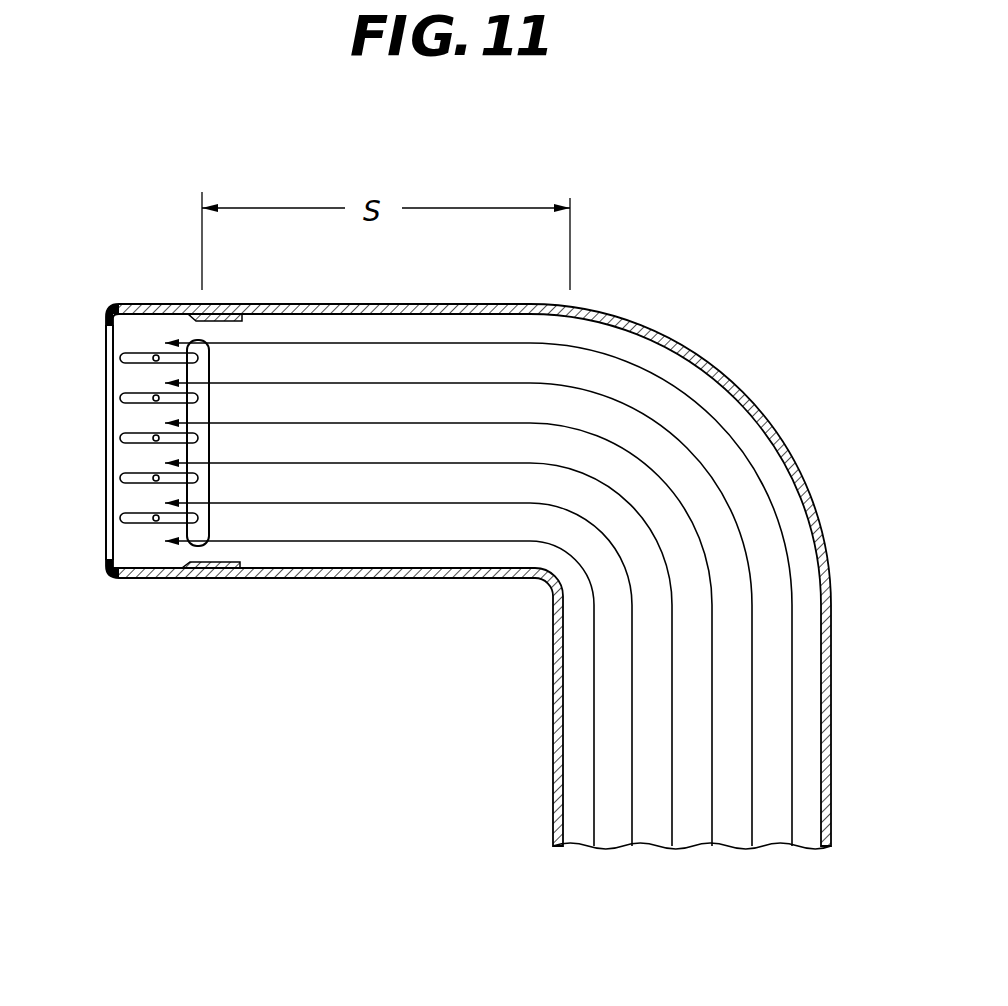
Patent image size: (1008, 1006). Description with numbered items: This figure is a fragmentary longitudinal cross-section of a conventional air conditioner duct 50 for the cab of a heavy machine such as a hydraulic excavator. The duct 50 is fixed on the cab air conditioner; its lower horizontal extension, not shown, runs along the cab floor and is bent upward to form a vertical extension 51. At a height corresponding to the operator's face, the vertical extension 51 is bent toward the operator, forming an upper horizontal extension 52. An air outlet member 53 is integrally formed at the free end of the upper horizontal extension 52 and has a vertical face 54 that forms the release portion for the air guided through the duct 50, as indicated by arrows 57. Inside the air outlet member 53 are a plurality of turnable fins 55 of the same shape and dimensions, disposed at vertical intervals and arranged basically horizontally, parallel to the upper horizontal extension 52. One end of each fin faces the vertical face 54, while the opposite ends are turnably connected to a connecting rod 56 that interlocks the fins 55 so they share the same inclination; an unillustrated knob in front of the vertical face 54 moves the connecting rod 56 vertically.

The air conditioner duct 50 is at (838, 658).
The vertical extension 51 is at (553, 768).
The upper horizontal extension 52 is at (320, 580).
The air outlet member 53 is at (156, 296).
The vertical face 54 is at (103, 398).
The turnable fins 55 is at (157, 523).
The connecting rod 56 is at (210, 477).
The arrows 57 is at (673, 492).